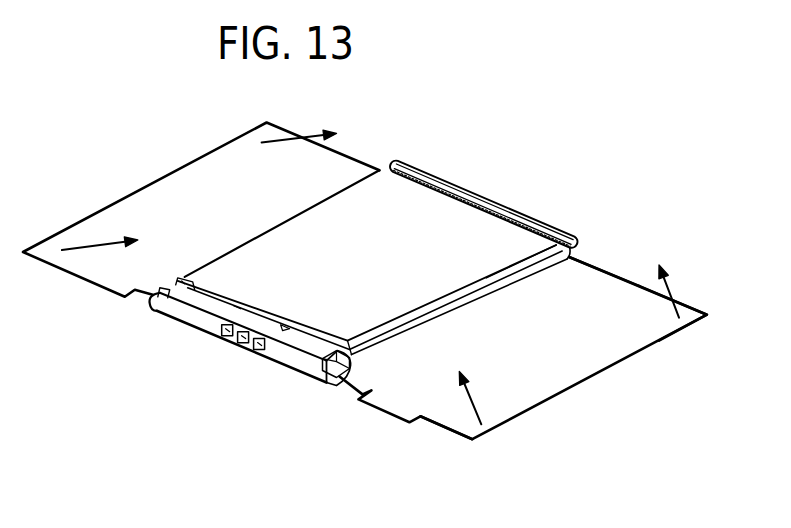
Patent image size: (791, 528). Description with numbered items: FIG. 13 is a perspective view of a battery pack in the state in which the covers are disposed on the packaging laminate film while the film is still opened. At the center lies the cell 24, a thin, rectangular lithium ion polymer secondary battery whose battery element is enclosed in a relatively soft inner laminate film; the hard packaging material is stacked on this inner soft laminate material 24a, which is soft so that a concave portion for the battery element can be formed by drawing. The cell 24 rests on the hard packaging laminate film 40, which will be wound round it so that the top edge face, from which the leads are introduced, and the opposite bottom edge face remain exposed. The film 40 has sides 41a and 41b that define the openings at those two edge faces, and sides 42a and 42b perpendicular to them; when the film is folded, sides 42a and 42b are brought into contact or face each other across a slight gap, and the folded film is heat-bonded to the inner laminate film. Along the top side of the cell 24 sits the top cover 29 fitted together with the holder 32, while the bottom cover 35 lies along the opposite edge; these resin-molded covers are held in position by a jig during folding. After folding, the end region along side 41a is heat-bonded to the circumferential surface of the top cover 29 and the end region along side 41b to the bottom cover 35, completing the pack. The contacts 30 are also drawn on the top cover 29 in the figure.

The cell 24 is at (374, 179).
The inner soft laminate material 24a is at (501, 232).
The top cover 29 is at (285, 354).
The contacts 30 is at (248, 344).
The holder 32 is at (344, 376).
The bottom cover 35 is at (463, 182).
The packaging laminate film 40 is at (549, 362).
The side 41a is at (431, 423).
The side 41b is at (598, 262).
The side 42a is at (668, 327).
The side 42b is at (160, 174).